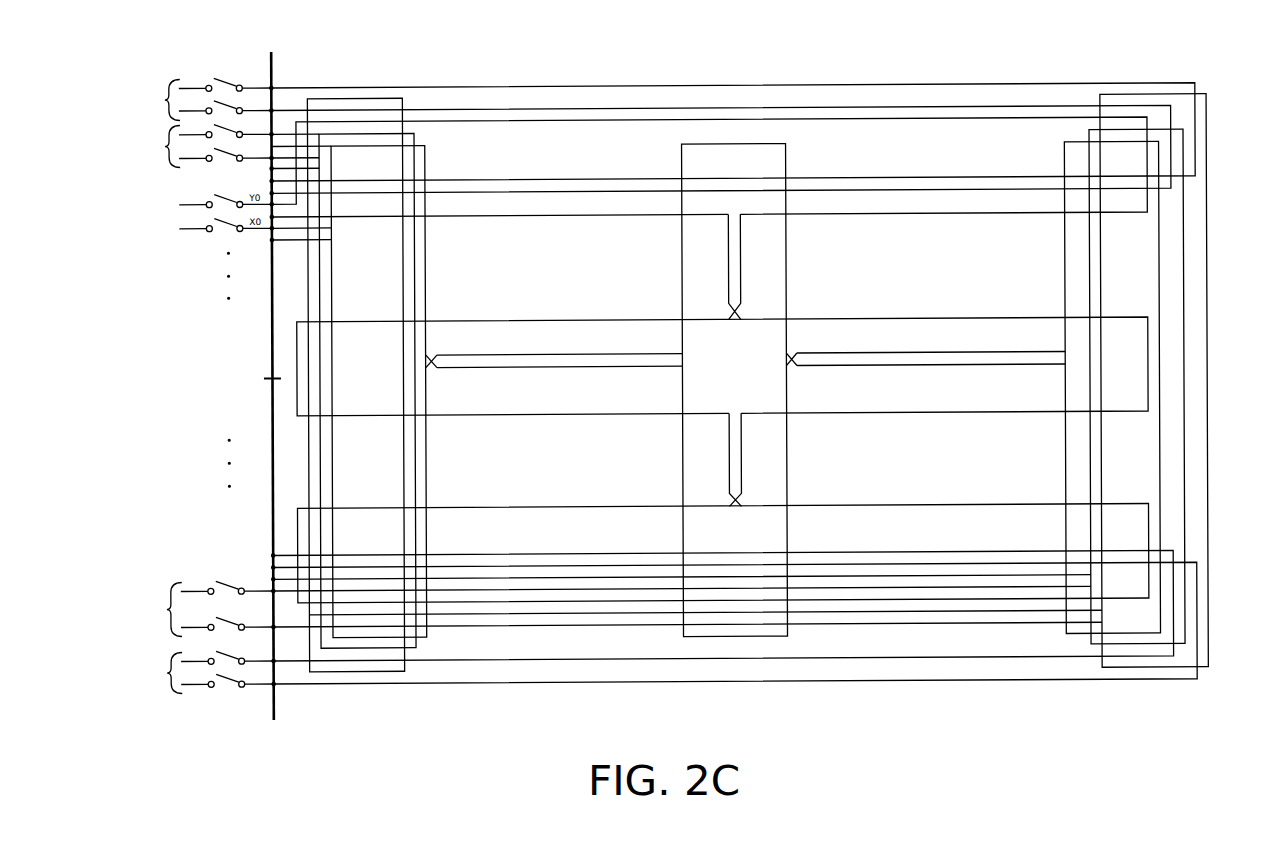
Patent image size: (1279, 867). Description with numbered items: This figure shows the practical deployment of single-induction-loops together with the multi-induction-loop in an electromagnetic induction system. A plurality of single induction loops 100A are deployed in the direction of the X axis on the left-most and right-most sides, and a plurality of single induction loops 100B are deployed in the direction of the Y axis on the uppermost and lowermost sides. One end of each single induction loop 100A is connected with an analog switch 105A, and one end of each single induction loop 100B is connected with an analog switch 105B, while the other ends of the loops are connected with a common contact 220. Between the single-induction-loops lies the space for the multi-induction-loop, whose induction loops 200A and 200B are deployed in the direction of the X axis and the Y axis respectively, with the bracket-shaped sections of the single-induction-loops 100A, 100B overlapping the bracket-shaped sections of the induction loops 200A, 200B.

The single-induction-loop 100A is at (1183, 146).
The single-induction-loop 100B is at (503, 108).
The induction loop 200A is at (353, 639).
The induction loop 200B is at (600, 121).
The common contact 220 is at (268, 379).
The analog switch 105A is at (191, 380).
The analog switch 105B is at (191, 385).